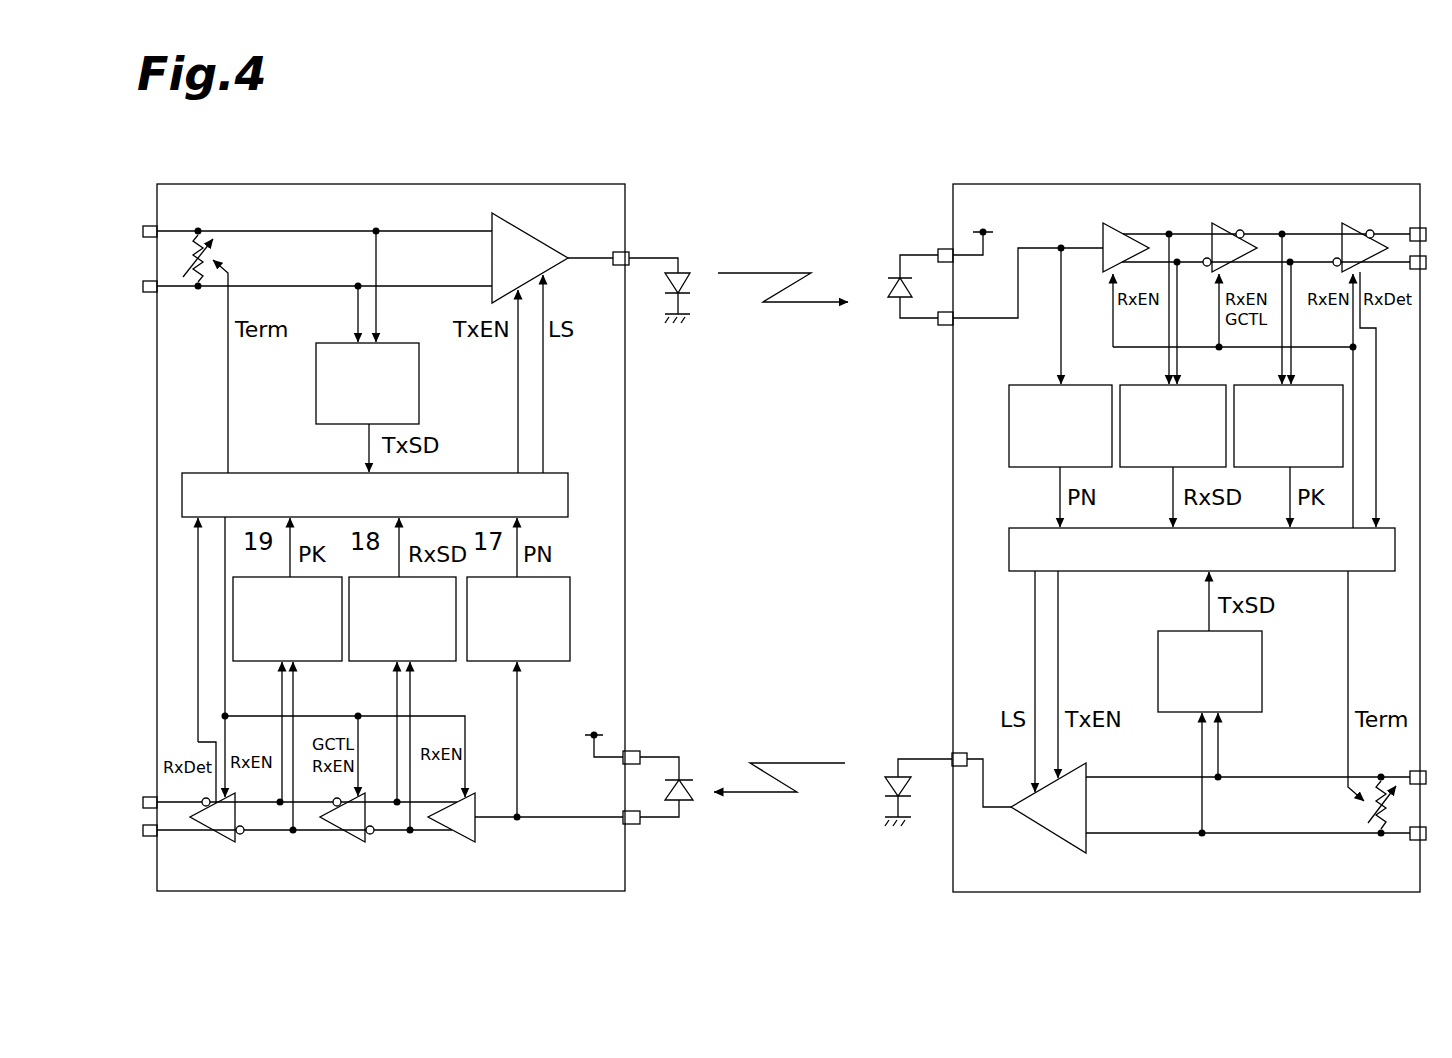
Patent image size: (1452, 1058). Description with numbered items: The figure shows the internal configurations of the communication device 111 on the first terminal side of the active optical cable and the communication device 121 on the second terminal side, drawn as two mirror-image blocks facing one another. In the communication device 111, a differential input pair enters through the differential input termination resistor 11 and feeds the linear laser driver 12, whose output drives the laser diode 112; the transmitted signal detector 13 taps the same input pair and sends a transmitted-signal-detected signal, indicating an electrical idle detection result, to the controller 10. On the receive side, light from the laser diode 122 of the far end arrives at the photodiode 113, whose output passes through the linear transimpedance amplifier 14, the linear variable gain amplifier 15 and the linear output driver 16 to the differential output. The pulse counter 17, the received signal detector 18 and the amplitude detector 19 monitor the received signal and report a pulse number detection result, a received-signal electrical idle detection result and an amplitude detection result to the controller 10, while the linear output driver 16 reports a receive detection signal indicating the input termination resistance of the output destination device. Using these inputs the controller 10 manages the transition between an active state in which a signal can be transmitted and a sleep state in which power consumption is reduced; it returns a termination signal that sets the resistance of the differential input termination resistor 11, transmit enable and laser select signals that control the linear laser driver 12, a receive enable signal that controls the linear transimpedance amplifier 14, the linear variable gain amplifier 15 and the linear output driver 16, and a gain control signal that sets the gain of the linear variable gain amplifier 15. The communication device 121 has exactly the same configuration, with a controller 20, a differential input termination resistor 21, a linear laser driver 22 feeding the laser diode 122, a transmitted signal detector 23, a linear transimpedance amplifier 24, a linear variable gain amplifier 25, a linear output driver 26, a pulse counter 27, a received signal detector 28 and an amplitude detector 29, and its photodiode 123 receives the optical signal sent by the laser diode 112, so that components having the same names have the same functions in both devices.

The controller 10 is at (277, 473).
The differential input termination resistor 11 is at (213, 257).
The linear laser driver 12 is at (528, 232).
The transmitted signal detector 13 is at (420, 386).
The linear transimpedance amplifier 14 is at (462, 842).
The linear variable gain amplifier 15 is at (352, 842).
The linear output driver 16 is at (222, 842).
The pulse counter 17 is at (503, 577).
The received signal detector 18 is at (380, 577).
The amplitude detector 19 is at (272, 577).
The controller 20 is at (1118, 575).
The differential input termination resistor 21 is at (1373, 812).
The linear laser driver 22 is at (1047, 830).
The transmitted signal detector 23 is at (1262, 670).
The linear transimpedance amplifier 24 is at (1112, 223).
The linear variable gain amplifier 25 is at (1222, 223).
The linear output driver 26 is at (1352, 223).
The pulse counter 27 is at (1030, 470).
The received signal detector 28 is at (1145, 470).
The amplitude detector 29 is at (1268, 470).
The communication device 111 is at (425, 184).
The laser diode 112 is at (685, 273).
The photodiode 113 is at (683, 800).
The communication device 121 is at (995, 184).
The laser diode 122 is at (893, 777).
The photodiode 123 is at (896, 297).